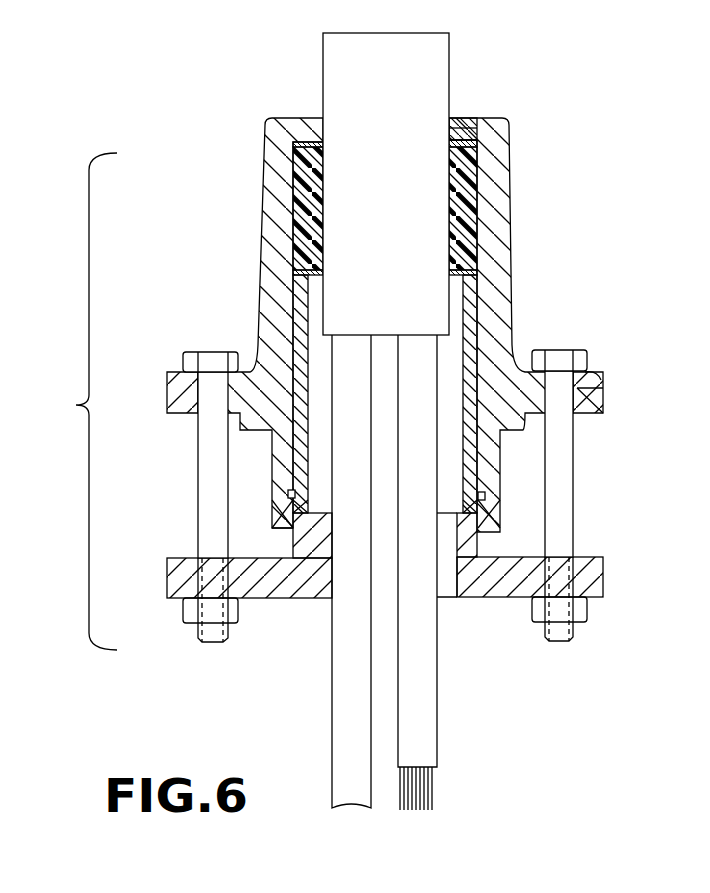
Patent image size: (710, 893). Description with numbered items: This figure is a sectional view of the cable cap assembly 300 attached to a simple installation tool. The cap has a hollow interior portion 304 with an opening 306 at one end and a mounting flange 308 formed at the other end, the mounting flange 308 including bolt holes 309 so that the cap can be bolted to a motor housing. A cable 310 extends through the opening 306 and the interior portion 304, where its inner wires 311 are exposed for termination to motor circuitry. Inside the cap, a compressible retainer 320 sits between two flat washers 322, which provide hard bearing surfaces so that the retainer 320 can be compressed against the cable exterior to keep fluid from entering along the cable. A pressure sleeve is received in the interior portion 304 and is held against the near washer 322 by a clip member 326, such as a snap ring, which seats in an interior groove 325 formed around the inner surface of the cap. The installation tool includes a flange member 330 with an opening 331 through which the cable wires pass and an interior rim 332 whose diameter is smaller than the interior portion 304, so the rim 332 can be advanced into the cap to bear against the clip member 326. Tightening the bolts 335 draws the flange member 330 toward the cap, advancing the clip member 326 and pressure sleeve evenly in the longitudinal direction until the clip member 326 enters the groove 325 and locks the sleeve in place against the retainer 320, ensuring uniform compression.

The cable cap assembly 300 is at (72, 401).
The hollow interior portion 304 is at (447, 347).
The opening 306 is at (463, 133).
The mounting flange 308 is at (603, 390).
The bolt holes 309 is at (600, 375).
The cable 310 is at (399, 88).
The inner wires 311 is at (419, 708).
The compressible retainer 320 is at (457, 205).
The washers 322 is at (467, 137).
The interior groove 325 is at (292, 500).
The clip member 326 is at (272, 505).
The flange member 330 is at (605, 573).
The opening 331 is at (448, 583).
The interior rim 332 is at (472, 523).
The bolts 335 is at (200, 445).